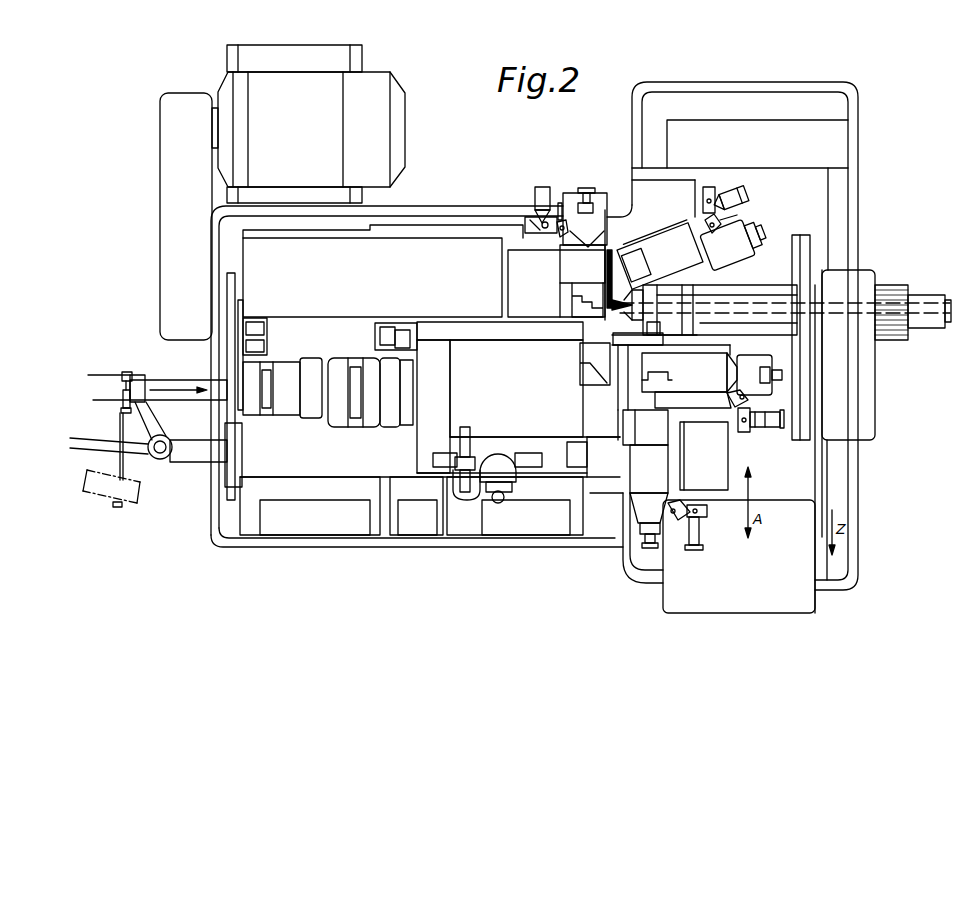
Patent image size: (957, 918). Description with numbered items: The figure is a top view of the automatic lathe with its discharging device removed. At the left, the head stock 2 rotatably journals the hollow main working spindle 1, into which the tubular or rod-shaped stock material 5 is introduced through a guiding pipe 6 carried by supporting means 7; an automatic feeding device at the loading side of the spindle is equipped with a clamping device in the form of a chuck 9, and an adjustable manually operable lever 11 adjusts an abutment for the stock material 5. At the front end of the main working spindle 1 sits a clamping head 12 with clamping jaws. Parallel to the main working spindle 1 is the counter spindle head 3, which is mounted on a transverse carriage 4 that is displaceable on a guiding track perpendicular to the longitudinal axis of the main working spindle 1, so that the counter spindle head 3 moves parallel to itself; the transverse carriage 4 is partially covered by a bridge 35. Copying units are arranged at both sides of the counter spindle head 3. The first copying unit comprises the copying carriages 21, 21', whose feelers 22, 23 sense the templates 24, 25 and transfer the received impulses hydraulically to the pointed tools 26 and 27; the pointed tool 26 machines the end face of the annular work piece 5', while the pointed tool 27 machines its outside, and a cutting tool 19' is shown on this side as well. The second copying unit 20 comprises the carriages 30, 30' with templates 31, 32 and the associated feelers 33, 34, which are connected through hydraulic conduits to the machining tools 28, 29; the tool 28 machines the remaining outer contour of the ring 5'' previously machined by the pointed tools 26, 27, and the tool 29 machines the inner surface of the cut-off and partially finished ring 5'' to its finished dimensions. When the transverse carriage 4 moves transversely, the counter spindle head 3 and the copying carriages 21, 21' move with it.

The main working spindle 1 is at (373, 404).
The head stock 2 is at (463, 398).
The counter spindle head 3 is at (763, 304).
The transverse carriage 4 is at (812, 137).
The stock material 5 is at (157, 377).
The annular work piece 5' is at (606, 378).
The ring 5'' is at (556, 283).
The guiding pipe 6 is at (103, 395).
The supporting means 7 is at (187, 458).
The chuck 9 is at (308, 417).
The adjustable manually operable lever 11 is at (497, 503).
The clamping head 12 is at (590, 377).
The cutting tool 19' is at (629, 535).
The second copying unit 20 is at (781, 267).
The copying carriage 21 is at (712, 374).
The copying carriage 21' is at (675, 451).
The feeler 22 is at (771, 421).
The feeler 23 is at (693, 551).
The template 24 is at (742, 433).
The template 25 is at (703, 518).
The pointed tool 26 is at (655, 395).
The pointed tool 27 is at (619, 424).
The machining tool 28 is at (607, 290).
The machining tool 29 is at (650, 343).
The carriage 30 is at (693, 252).
The carriage 30' is at (585, 254).
The template 31 is at (709, 188).
The template 32 is at (527, 222).
The feeler 33 is at (732, 190).
The feeler 34 is at (540, 203).
The bridge 35 is at (820, 190).